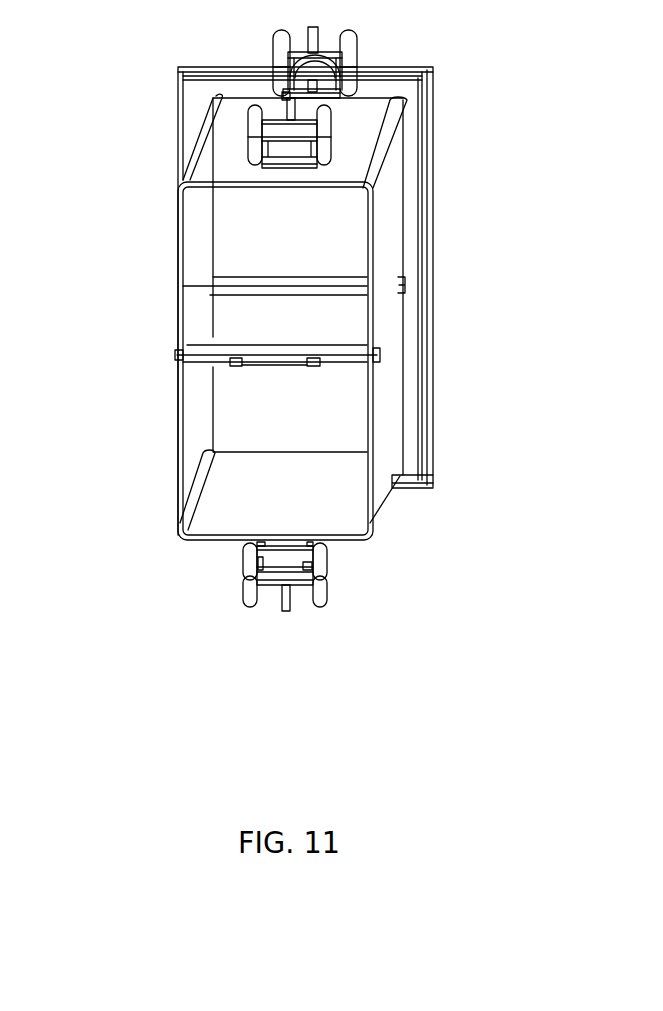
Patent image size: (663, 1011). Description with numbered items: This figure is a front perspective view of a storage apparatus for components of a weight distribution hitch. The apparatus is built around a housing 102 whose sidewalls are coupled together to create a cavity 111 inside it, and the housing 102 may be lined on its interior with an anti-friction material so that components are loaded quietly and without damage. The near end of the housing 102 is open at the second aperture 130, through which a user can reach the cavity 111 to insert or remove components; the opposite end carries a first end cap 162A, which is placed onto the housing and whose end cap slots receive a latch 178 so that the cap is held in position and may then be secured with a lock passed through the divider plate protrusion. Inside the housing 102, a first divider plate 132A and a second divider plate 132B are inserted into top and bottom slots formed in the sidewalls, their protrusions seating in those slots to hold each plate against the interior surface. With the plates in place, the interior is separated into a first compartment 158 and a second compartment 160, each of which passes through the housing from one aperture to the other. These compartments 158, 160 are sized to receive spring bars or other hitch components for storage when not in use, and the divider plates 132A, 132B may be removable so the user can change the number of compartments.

The housing 102 is at (385, 247).
The first end cap 162A is at (222, 78).
The second aperture 130 is at (342, 228).
The first compartment 158 is at (248, 248).
The first divider plate 132A is at (228, 282).
The second divider plate 132B is at (330, 348).
The cavity 111 is at (208, 385).
The second compartment 160 is at (243, 474).
The latch 178 is at (312, 563).